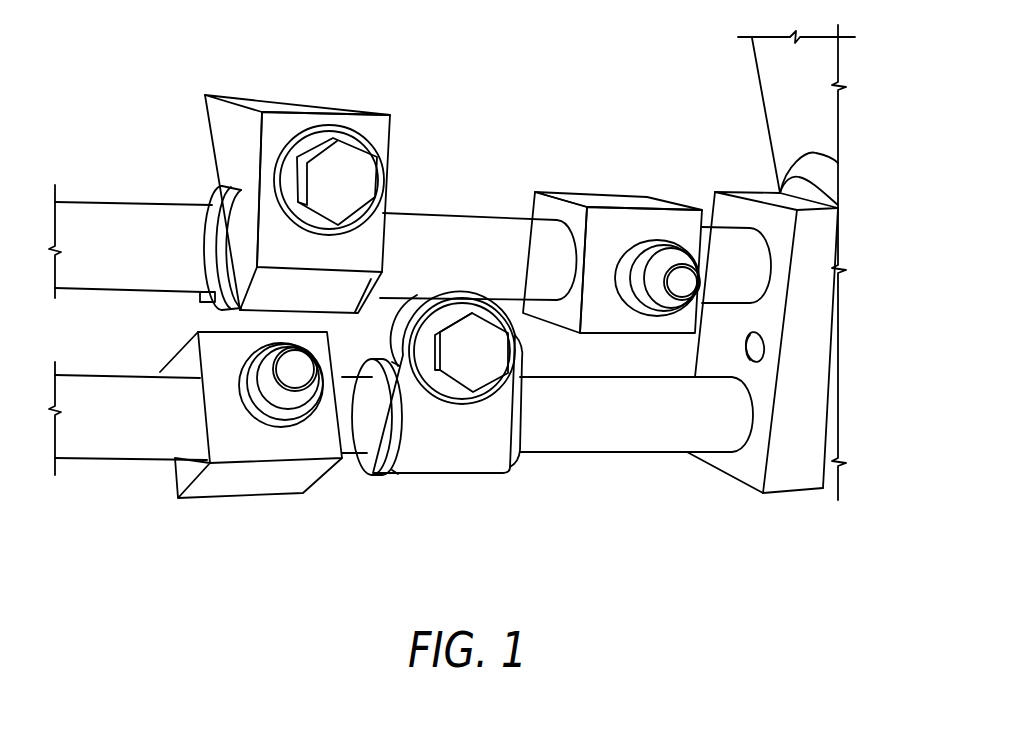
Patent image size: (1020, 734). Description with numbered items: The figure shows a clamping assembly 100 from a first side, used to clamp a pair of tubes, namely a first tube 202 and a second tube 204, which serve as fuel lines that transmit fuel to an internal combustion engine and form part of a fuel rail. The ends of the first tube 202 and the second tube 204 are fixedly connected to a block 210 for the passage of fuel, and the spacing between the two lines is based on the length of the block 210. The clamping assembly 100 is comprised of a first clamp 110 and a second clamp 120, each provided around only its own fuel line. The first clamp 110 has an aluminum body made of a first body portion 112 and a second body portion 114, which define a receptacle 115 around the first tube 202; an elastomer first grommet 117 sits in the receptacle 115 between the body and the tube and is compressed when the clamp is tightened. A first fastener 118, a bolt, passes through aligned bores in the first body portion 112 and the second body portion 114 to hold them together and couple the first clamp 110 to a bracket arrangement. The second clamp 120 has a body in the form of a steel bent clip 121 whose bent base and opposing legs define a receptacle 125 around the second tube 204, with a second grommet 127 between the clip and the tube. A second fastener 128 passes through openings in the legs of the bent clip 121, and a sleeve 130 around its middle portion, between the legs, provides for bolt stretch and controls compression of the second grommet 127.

The clamping assembly 100 is at (475, 298).
The first clamp 110 is at (334, 158).
The first body portion 112 is at (225, 95).
The second body portion 114 is at (300, 108).
The receptacle 115 is at (195, 304).
The first grommet 117 is at (213, 200).
The first fastener 118 is at (362, 173).
The second clamp 120 is at (448, 416).
The bent clip 121 is at (443, 457).
The receptacle 125 is at (400, 379).
The second grommet 127 is at (369, 470).
The second fastener 128 is at (492, 372).
The sleeve 130 is at (413, 305).
The first tube 202 is at (92, 218).
The second tube 204 is at (98, 442).
The block 210 is at (767, 342).